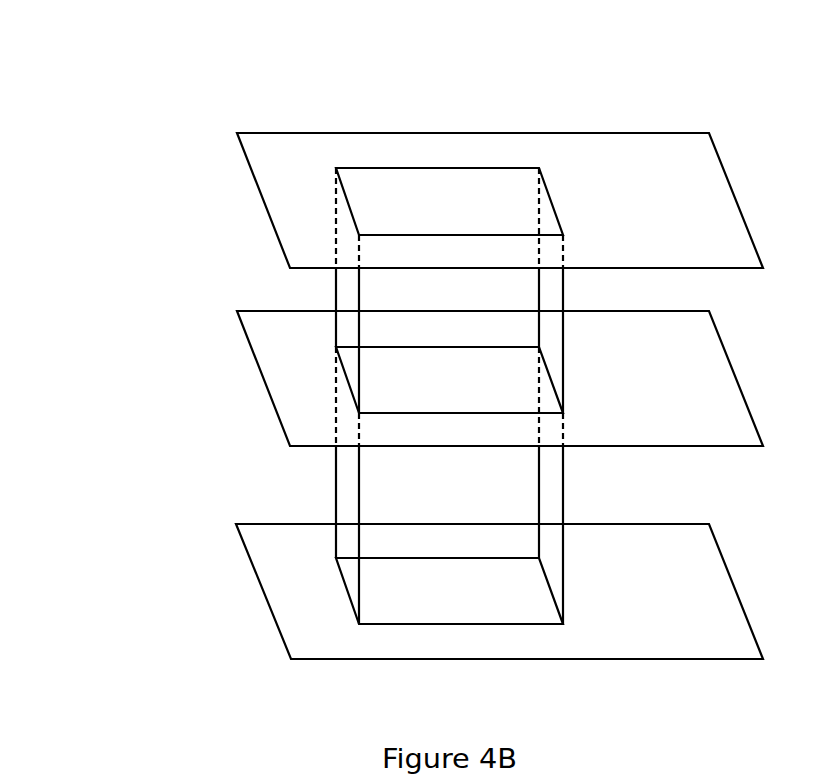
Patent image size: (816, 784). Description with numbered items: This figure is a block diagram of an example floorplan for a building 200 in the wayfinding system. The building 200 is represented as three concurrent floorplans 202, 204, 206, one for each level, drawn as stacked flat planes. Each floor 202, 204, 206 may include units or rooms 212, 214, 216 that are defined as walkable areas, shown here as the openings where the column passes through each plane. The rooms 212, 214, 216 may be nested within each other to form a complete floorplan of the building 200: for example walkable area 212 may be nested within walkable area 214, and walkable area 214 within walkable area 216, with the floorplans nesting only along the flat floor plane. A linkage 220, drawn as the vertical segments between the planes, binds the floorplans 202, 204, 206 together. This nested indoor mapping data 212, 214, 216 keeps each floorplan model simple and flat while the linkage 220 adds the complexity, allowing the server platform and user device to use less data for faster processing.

The building 200 is at (148, 80).
The floorplan 202 is at (255, 182).
The floorplan 204 is at (255, 359).
The floorplan 206 is at (255, 573).
The walkable area 212 is at (352, 212).
The walkable area 214 is at (352, 392).
The walkable area 216 is at (352, 603).
The linkage 220 is at (336, 285).